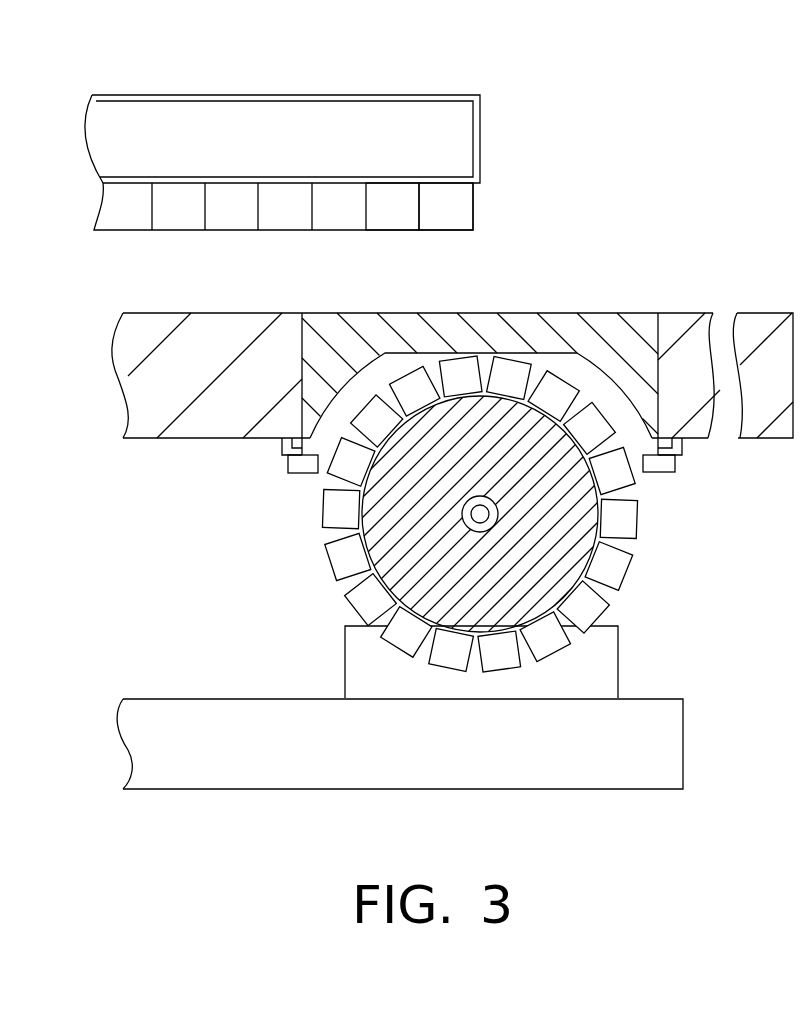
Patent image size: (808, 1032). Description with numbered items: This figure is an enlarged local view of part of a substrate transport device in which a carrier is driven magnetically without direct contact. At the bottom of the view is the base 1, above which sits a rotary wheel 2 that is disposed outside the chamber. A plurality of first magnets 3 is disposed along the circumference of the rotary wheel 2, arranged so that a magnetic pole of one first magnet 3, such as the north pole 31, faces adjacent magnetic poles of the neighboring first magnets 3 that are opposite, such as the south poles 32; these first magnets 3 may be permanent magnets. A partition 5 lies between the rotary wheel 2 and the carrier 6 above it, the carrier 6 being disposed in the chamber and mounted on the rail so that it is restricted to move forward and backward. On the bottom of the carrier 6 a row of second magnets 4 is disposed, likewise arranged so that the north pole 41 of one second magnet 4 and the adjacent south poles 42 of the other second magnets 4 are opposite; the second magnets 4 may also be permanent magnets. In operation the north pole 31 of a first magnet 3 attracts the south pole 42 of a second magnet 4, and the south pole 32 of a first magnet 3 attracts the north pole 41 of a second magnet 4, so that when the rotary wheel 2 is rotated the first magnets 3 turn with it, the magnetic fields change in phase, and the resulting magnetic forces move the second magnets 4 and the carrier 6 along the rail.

The base 1 is at (168, 738).
The rotary wheel 2 is at (452, 573).
The first magnet 3 is at (328, 558).
The north pole 31 is at (455, 392).
The south pole 32 is at (420, 375).
The second magnet 4 is at (282, 200).
The north pole 41 is at (377, 218).
The south pole 42 is at (464, 220).
The partition 5 is at (624, 330).
The carrier 6 is at (283, 132).